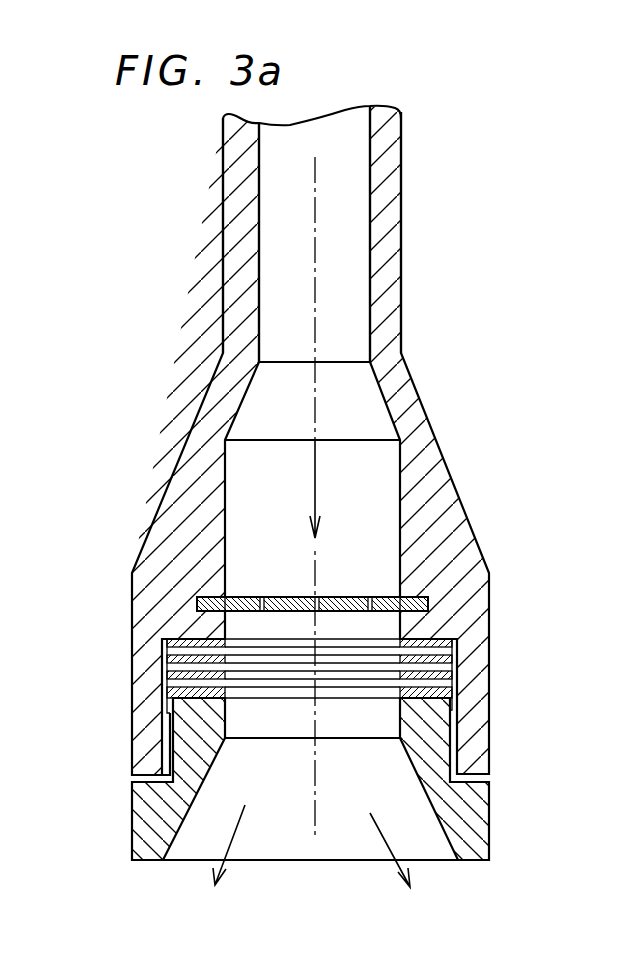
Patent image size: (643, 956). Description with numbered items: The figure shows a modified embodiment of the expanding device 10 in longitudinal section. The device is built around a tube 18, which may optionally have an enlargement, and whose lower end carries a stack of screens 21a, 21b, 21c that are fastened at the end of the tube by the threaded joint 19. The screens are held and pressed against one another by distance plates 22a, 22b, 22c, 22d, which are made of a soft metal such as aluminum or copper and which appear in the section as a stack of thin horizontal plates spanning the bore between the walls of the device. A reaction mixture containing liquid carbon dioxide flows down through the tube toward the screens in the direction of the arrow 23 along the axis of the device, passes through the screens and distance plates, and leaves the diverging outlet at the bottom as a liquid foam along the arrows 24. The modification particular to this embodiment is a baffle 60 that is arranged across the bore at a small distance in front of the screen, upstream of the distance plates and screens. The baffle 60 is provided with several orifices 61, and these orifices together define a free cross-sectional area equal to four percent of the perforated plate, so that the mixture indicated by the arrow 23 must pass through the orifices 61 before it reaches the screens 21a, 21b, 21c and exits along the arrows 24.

The expanding device 10 is at (491, 453).
The tube 18 is at (401, 227).
The threaded joint 19 is at (456, 700).
The screen 21a is at (363, 652).
The screen 21b is at (285, 668).
The screen 21c is at (255, 683).
The distance plate 22a is at (455, 643).
The distance plate 22b is at (455, 661).
The distance plate 22c is at (455, 675).
The distance plate 22d is at (455, 691).
The arrow 23 is at (315, 465).
The arrows 24 is at (386, 843).
The baffle 60 is at (210, 600).
The orifices 61 is at (370, 597).